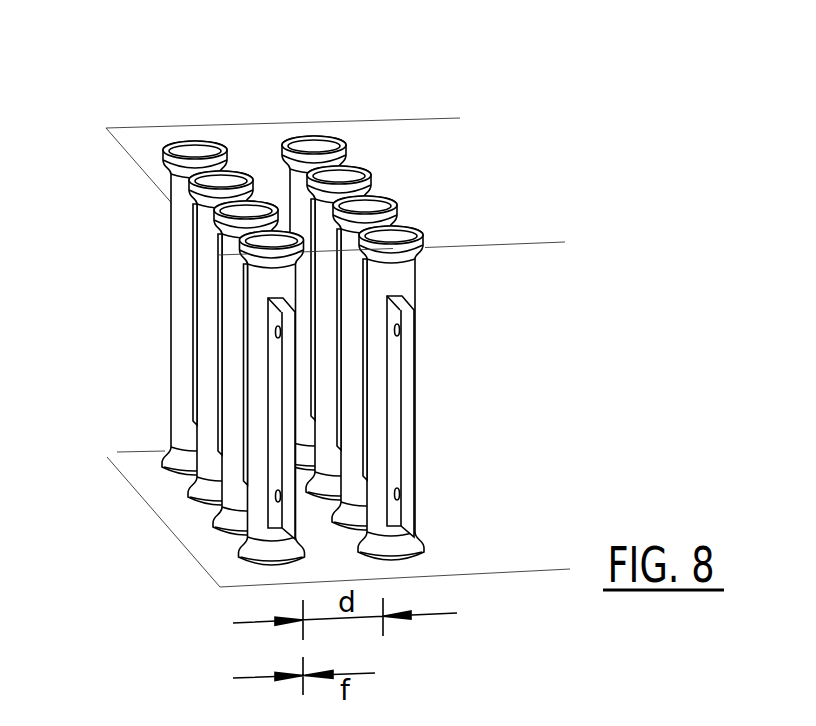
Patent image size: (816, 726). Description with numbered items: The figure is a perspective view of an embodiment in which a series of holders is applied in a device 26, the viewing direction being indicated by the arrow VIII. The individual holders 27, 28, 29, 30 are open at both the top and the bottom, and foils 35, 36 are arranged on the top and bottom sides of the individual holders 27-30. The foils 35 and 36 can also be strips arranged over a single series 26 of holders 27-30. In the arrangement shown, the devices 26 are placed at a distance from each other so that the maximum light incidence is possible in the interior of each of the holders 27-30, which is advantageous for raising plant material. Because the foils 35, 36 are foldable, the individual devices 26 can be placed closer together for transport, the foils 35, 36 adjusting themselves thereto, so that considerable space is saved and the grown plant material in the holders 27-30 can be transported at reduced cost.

The device 26 is at (141, 348).
The holder 27 is at (177, 405).
The holder 28 is at (207, 452).
The holder 29 is at (232, 488).
The holder 30 is at (262, 527).
The foil 35 is at (502, 239).
The foil 36 is at (502, 567).
The section line VIII is at (291, 86).